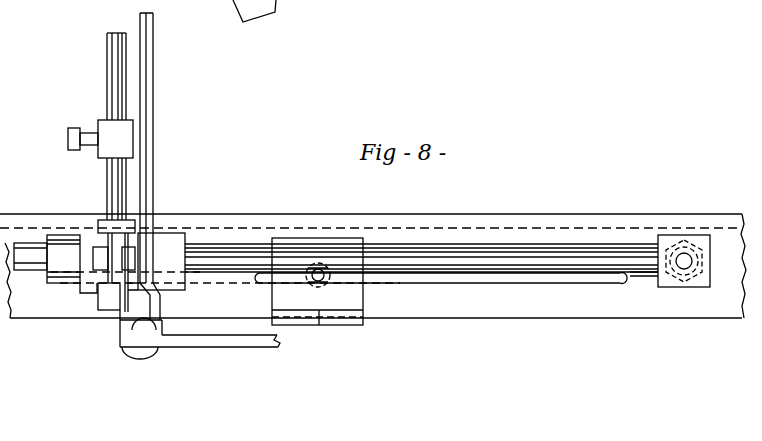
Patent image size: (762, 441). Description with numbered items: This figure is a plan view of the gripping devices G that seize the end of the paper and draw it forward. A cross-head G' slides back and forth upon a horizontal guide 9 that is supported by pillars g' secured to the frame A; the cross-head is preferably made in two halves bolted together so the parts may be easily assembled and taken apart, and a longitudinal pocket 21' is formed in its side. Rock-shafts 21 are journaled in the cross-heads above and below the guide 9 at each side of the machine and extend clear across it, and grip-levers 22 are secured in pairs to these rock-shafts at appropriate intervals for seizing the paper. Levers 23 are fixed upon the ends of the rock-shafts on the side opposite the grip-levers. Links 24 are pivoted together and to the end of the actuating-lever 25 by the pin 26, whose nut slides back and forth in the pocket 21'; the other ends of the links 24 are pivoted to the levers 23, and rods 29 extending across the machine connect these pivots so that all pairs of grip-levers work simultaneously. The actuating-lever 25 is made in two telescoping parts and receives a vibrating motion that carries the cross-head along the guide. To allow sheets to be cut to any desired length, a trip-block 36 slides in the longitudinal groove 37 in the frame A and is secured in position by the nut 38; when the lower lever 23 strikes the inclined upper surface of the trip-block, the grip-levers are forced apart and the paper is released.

The frame A is at (373, 266).
The rod 9 is at (548, 262).
The longitudinal groove 37 is at (464, 277).
The trip-block 36 is at (333, 330).
The nut 38 is at (322, 270).
The pillars g' is at (684, 273).
The rock-shafts 21 is at (110, 172).
The rods 29 is at (153, 80).
The grip-levers 22 is at (68, 138).
The gripping devices G is at (129, 223).
The cross-head G' is at (178, 242).
The longitudinal pocket 21' is at (165, 297).
The levers 23 is at (123, 298).
The links 24 is at (163, 329).
The pin 26 is at (138, 352).
The actuating-lever 25 is at (254, 340).